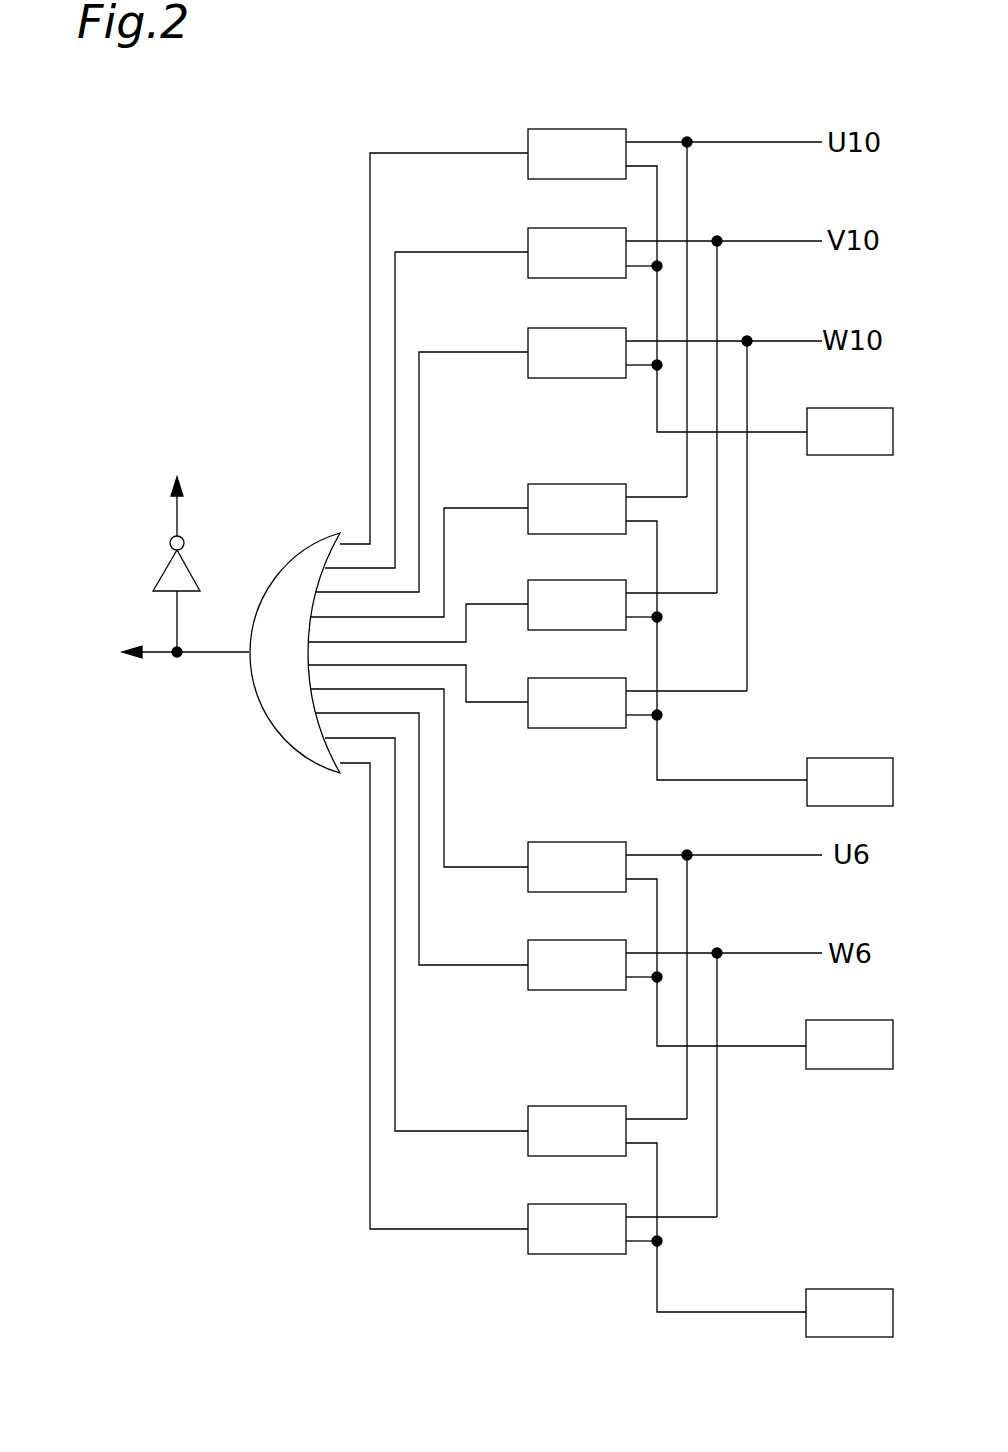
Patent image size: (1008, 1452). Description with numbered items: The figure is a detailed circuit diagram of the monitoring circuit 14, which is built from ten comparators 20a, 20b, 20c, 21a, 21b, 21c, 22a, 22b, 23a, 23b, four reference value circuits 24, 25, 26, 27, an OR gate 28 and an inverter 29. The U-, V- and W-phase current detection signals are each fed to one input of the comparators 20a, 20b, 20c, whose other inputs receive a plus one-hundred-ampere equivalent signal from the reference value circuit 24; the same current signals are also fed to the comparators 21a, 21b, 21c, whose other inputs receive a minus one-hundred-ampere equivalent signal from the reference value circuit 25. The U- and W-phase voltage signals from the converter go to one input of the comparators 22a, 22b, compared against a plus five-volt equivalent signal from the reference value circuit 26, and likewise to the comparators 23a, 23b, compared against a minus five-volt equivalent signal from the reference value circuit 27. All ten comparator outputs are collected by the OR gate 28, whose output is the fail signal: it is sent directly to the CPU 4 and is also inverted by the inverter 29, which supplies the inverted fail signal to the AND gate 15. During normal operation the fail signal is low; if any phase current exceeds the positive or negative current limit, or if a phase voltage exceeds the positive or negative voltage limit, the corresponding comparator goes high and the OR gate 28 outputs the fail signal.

The monitoring circuit 14 is at (296, 395).
The CPU 4 is at (142, 652).
The AND gate 15 is at (181, 489).
The comparator 20a is at (547, 129).
The comparator 20b is at (547, 228).
The comparator 20c is at (547, 328).
The comparator 21a is at (547, 484).
The comparator 21b is at (547, 580).
The comparator 21c is at (547, 678).
The comparator 22a is at (547, 842).
The comparator 22b is at (547, 940).
The comparator 23a is at (547, 1106).
The comparator 23b is at (547, 1204).
The reference value circuit 24 is at (851, 457).
The reference value circuit 25 is at (848, 757).
The reference value circuit 26 is at (851, 1070).
The reference value circuit 27 is at (848, 1289).
The OR gate 28 is at (264, 712).
The inverter 29 is at (196, 576).